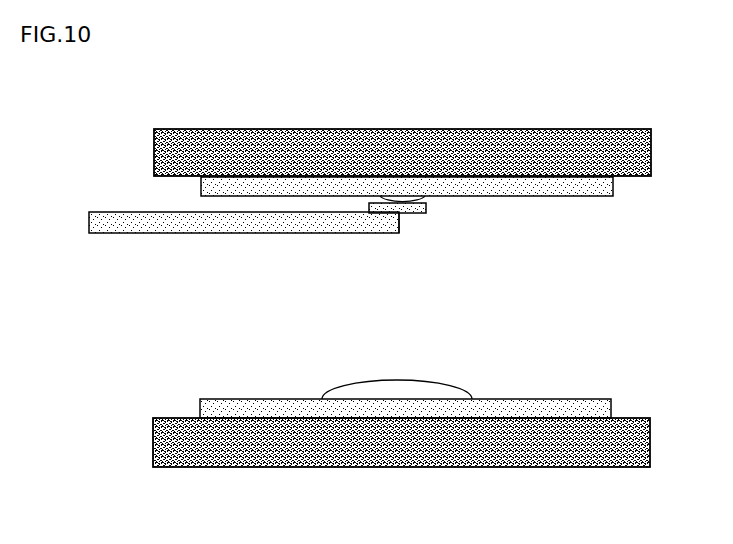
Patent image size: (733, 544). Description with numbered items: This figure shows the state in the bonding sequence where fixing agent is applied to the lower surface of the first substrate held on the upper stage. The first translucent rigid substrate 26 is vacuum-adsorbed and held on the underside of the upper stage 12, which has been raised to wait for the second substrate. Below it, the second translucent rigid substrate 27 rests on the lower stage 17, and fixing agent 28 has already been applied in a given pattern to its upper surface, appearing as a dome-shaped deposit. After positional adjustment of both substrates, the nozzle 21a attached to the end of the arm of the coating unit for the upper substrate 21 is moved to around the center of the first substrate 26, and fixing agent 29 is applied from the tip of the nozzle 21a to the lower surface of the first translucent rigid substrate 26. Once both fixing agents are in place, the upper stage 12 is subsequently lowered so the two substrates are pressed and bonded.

The upper stage 12 is at (320, 128).
The first translucent rigid substrate 26 is at (580, 196).
The fixing agent 29 is at (426, 197).
The coating unit for the upper substrate 21 is at (192, 233).
The rotary nozzle 21a is at (412, 214).
The second translucent rigid substrate 27 is at (200, 400).
The fixing agent 28 is at (385, 380).
The lower stage 17 is at (152, 443).